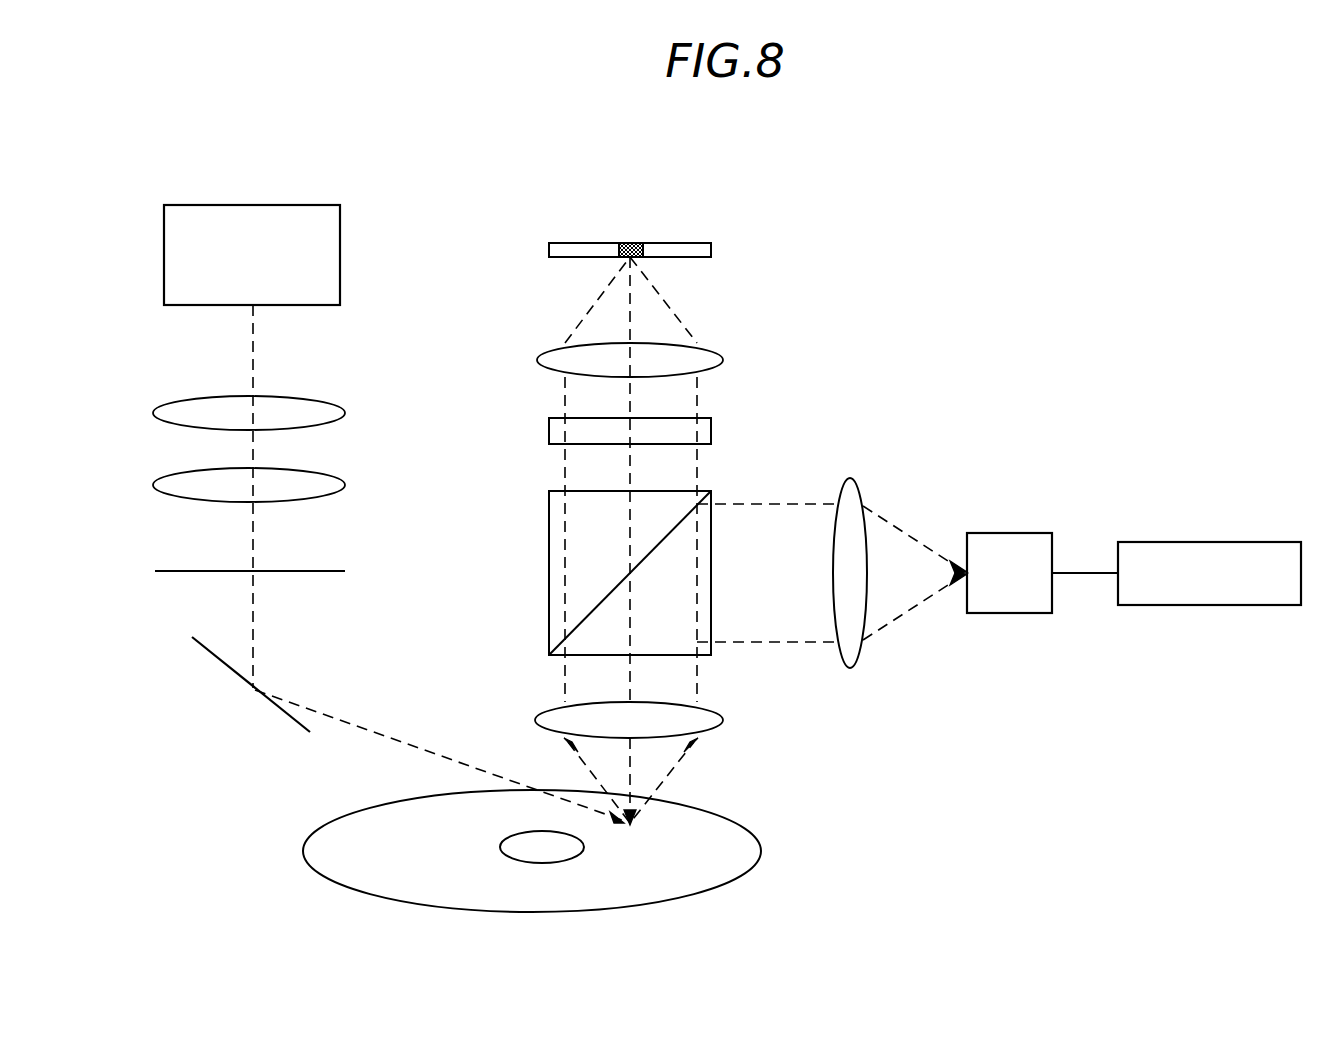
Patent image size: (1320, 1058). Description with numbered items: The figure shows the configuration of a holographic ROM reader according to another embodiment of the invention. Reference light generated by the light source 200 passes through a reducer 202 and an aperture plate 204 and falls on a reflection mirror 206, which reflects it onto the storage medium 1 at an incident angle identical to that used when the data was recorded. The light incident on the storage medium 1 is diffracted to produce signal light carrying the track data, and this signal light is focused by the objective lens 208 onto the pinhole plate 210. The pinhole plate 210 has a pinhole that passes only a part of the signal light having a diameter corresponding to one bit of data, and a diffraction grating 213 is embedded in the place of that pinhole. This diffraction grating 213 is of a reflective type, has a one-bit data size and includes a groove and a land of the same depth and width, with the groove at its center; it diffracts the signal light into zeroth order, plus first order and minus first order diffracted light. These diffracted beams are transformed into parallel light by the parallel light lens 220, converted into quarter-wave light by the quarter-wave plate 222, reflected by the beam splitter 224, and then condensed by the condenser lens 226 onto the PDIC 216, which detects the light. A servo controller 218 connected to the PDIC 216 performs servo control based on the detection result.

The storage medium 1 is at (342, 868).
The light source 200 is at (286, 205).
The reducer 202 is at (364, 414).
The aperture plate 204 is at (326, 571).
The reflection mirror 206 is at (278, 708).
The objective lens 208 is at (720, 712).
The pinhole plate 210 is at (703, 243).
The diffraction grating 213 is at (624, 259).
The PDIC 216 is at (1003, 533).
The servo controller 218 is at (1250, 542).
The parallel light lens 220 is at (720, 356).
The λ/4 plate 222 is at (711, 422).
The beam splitter 224 is at (549, 573).
The condenser lens 226 is at (851, 479).